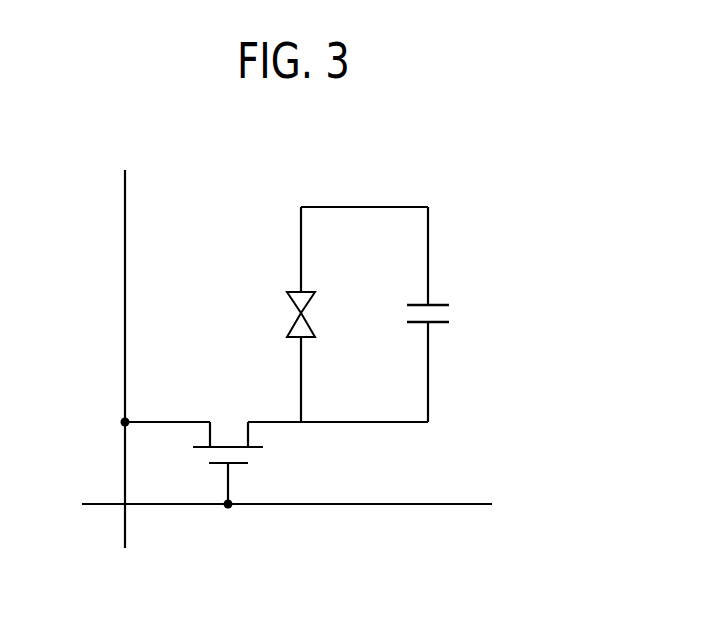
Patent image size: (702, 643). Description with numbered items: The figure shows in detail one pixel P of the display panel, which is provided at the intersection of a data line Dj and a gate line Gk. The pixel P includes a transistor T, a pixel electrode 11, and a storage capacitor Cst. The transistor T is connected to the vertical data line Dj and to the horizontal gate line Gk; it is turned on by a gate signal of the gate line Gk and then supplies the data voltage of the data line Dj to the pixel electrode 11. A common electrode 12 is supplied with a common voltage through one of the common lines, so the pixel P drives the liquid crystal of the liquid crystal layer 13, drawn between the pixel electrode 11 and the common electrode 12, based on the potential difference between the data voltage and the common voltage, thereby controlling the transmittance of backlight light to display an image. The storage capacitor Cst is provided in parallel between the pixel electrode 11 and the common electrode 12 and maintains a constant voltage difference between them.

The pixel electrode 11 is at (294, 337).
The common electrode 12 is at (294, 291).
The liquid crystal layer 13 is at (300, 315).
The pixel P is at (307, 312).
The transistor T is at (204, 463).
The storage capacitor Cst is at (449, 317).
The data line Dj is at (125, 212).
The gate line Gk is at (364, 505).